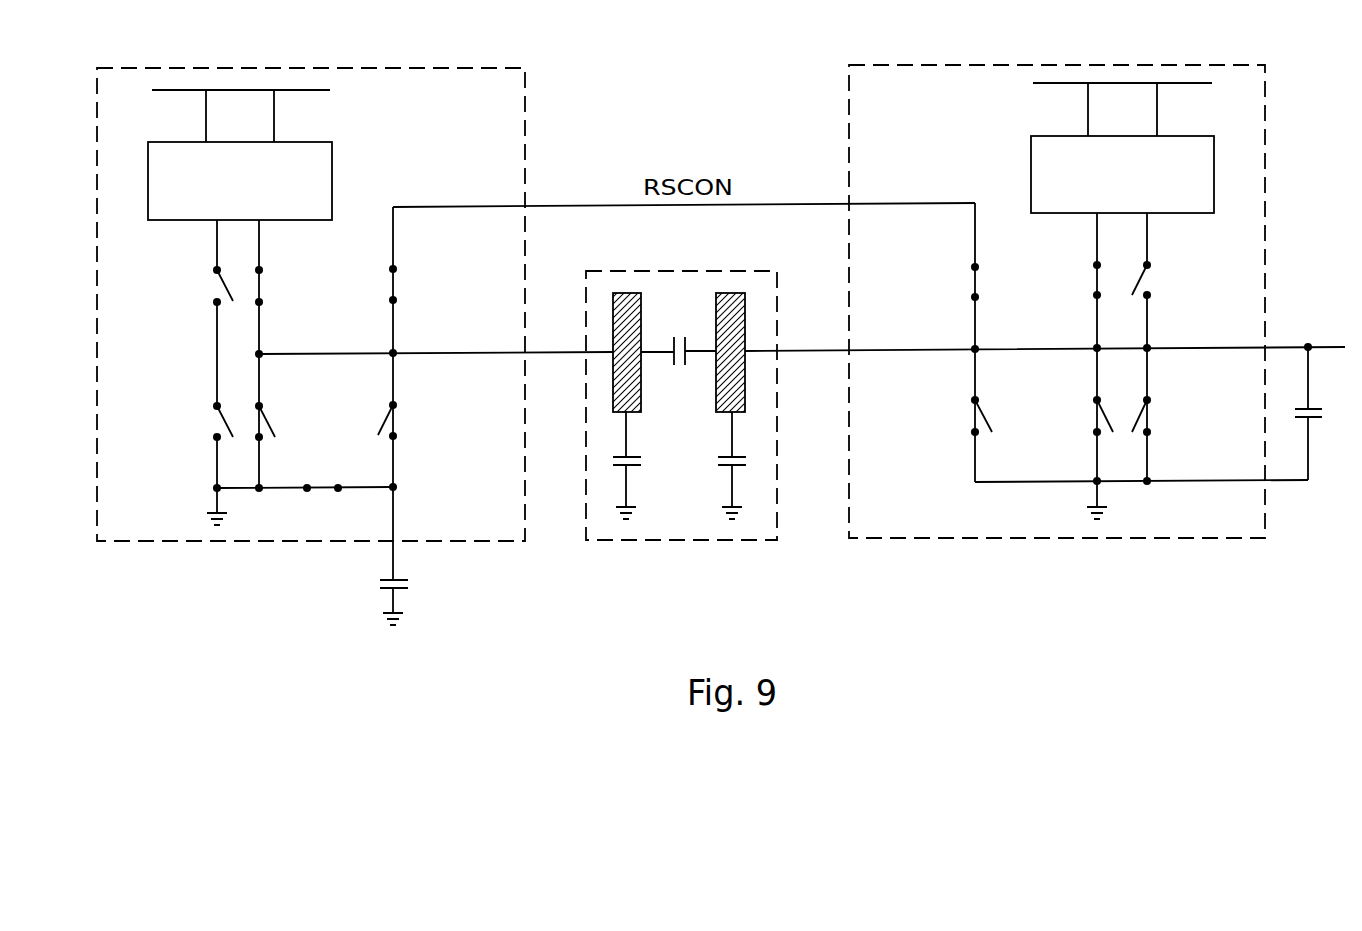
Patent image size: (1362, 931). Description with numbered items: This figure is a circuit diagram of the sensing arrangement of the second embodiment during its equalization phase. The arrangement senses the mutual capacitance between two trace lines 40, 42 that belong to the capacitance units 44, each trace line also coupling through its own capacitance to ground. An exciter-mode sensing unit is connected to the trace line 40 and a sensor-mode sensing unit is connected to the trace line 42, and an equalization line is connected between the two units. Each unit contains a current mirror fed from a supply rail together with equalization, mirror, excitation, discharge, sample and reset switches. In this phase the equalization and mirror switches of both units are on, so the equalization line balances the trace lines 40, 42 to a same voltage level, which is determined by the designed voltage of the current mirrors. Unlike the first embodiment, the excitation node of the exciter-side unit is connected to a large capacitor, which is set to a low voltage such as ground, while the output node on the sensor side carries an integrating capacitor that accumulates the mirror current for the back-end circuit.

The trace line 40 is at (613, 412).
The trace line 42 is at (745, 330).
The capacitance units 44 is at (685, 541).